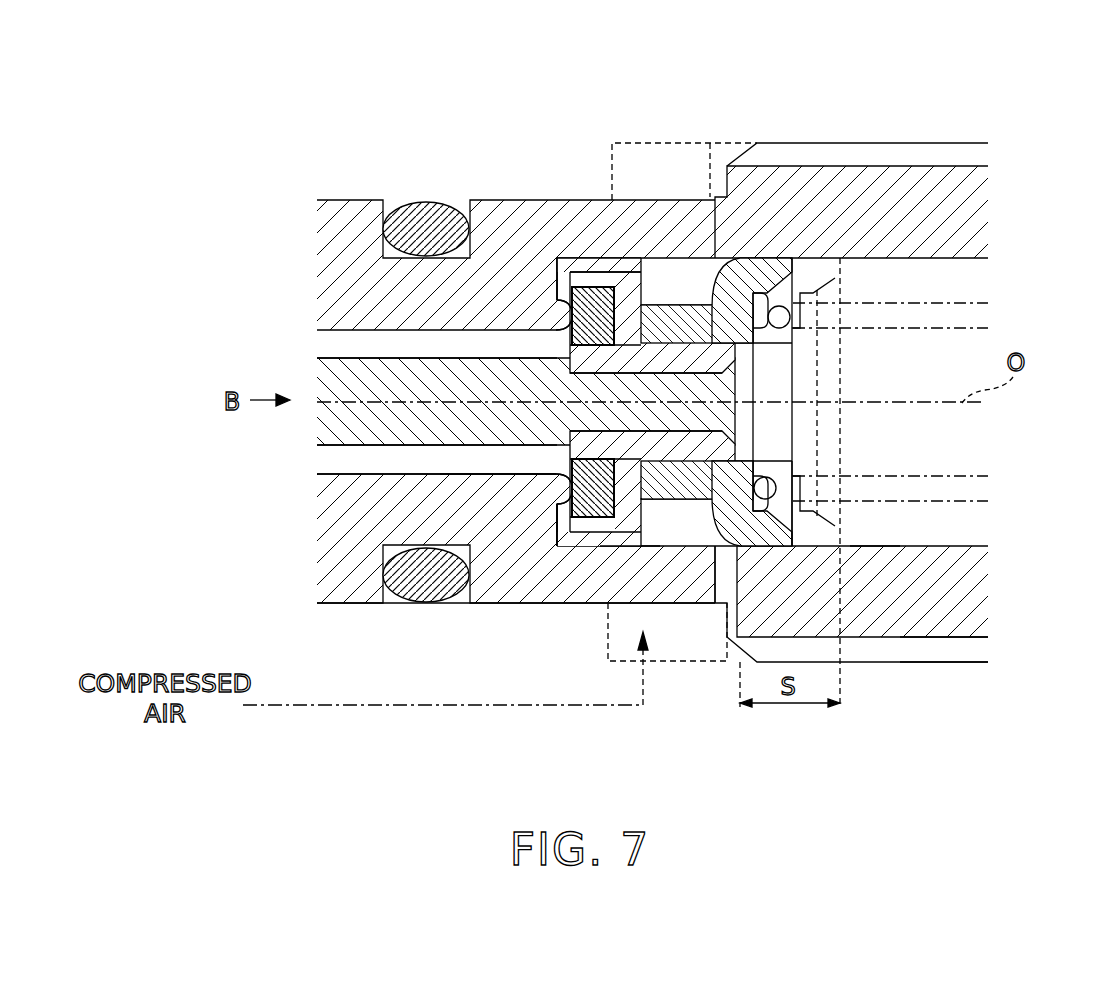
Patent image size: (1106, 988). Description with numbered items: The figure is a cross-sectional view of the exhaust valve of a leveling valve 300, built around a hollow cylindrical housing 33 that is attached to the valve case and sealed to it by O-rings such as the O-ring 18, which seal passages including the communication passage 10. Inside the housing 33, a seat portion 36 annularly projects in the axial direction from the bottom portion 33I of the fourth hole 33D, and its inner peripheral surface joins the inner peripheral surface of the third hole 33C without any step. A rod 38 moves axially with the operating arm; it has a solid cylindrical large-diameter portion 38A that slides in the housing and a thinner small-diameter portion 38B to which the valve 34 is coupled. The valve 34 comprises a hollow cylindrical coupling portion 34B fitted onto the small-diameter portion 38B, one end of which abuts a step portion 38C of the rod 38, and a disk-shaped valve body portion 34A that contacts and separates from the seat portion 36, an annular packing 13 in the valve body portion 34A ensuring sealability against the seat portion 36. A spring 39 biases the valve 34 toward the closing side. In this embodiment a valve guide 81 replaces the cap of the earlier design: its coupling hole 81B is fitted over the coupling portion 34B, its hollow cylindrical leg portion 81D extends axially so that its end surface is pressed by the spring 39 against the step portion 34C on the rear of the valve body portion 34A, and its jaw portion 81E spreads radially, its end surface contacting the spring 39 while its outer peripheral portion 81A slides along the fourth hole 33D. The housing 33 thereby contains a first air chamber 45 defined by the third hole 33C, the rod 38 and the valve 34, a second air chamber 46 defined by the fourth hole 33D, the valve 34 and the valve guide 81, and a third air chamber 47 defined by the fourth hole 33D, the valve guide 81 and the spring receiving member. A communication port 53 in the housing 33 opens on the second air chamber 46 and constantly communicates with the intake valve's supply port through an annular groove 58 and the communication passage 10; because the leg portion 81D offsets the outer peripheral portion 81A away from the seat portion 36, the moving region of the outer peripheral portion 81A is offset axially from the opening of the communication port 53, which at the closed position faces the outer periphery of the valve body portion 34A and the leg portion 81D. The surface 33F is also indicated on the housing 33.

The communication passage 10 is at (350, 710).
The packing 13 is at (585, 520).
The O-ring 18 is at (412, 203).
The housing 33 is at (947, 170).
The third hole 33C is at (487, 470).
The fourth hole 33D is at (930, 545).
The casing lower face 33F is at (928, 662).
The bottom portion 33I is at (555, 525).
The valve 34 is at (502, 42).
The valve body portion 34A is at (600, 290).
The coupling portion 34B is at (648, 290).
The step portion 34C is at (655, 350).
The seat portion 36 is at (567, 322).
The rod 38 is at (353, 373).
The large-diameter portion 38A is at (376, 358).
The small-diameter portion 38B is at (612, 275).
The step portion 38C is at (560, 320).
The spring 39 is at (795, 500).
The first air chamber 45 is at (363, 463).
The second air chamber 46 is at (690, 535).
The third air chamber 47 is at (873, 505).
The communication port 53 is at (630, 555).
The annular groove 58 is at (608, 662).
The valve guide 81 is at (938, 42).
The outer peripheral portion 81A is at (790, 275).
The coupling hole 81B is at (745, 285).
The leg portion 81D is at (665, 325).
The jaw portion 81E is at (705, 320).
The leveling valve 300 is at (997, 143).